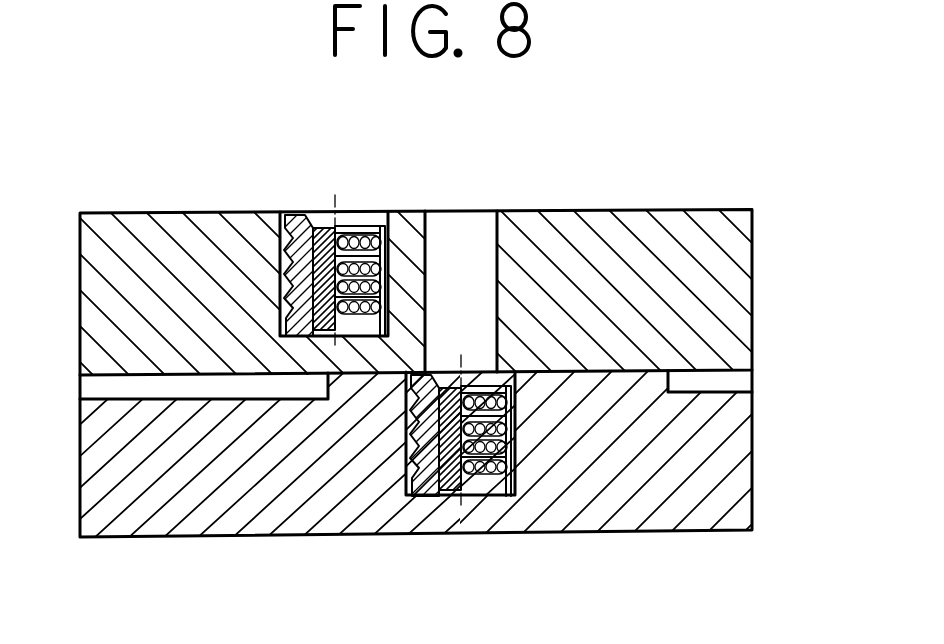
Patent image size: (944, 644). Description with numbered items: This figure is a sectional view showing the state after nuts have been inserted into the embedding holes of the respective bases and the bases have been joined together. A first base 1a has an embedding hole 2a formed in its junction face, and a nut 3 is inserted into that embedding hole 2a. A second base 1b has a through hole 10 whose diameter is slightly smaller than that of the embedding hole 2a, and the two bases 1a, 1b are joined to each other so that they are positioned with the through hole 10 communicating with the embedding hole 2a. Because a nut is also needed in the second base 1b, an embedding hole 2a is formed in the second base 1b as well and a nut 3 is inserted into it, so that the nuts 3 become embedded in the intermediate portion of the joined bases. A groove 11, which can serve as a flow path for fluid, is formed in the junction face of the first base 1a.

The first base 1a is at (162, 507).
The second base 1b is at (172, 240).
The embedding hole 2a is at (300, 222).
The nut 3 is at (352, 222).
The through hole 10 is at (497, 291).
The groove 11 is at (713, 389).